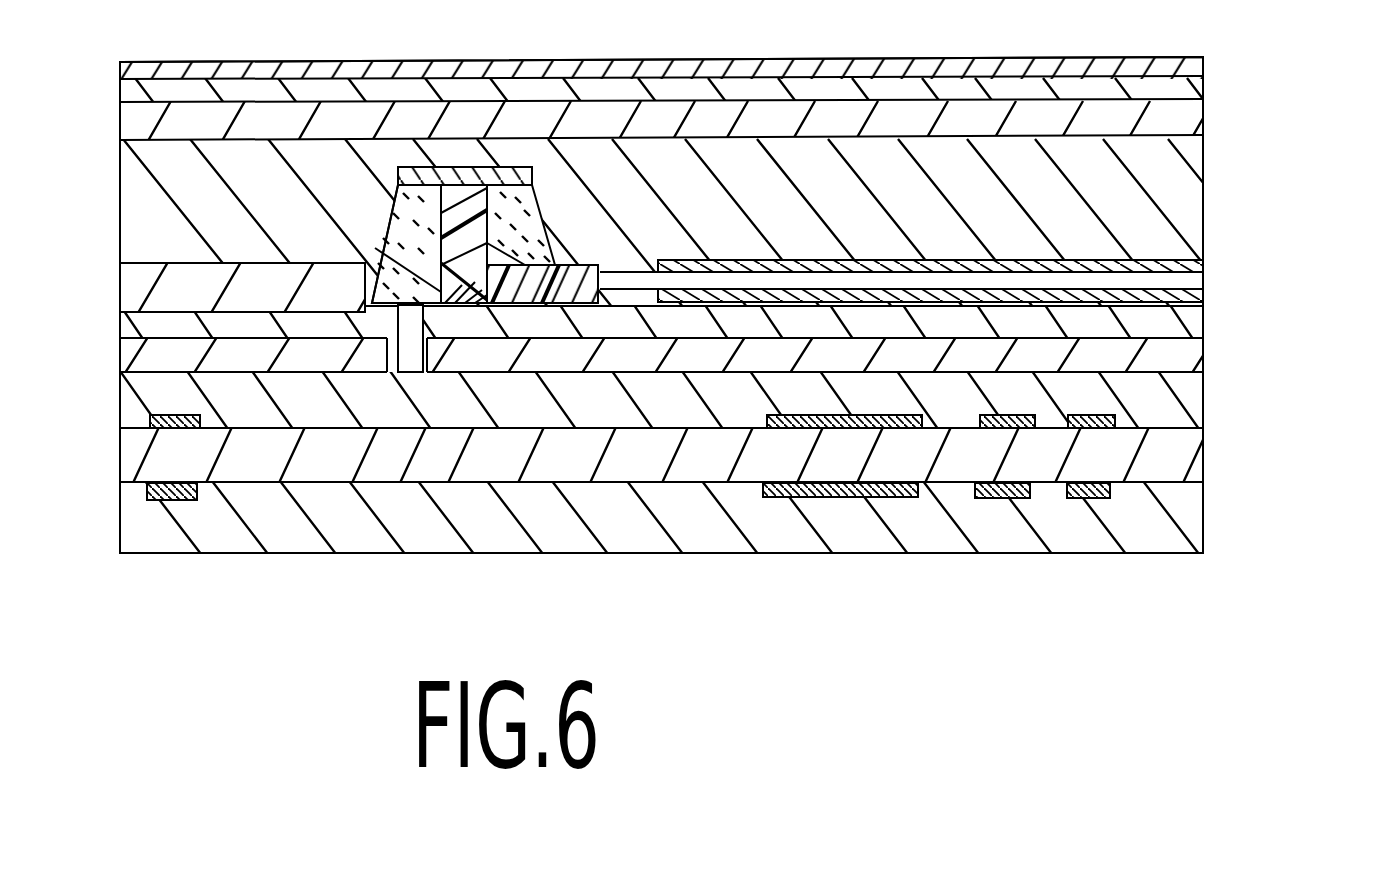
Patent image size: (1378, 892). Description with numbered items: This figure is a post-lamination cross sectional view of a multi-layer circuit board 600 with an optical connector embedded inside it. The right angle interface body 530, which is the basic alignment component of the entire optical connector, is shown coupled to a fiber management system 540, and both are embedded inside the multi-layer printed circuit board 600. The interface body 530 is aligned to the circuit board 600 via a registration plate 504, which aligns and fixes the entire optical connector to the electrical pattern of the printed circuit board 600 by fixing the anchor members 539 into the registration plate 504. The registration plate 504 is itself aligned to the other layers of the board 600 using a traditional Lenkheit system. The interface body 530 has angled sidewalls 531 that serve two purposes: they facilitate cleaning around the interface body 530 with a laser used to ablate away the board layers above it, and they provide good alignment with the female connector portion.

The registration plate 504 is at (1205, 343).
The right angle interface body 530 is at (538, 201).
The angled sidewalls 531 is at (382, 219).
The anchor members 539 is at (402, 373).
The fiber management system 540 is at (1073, 262).
The multi-layer circuit board 600 is at (1082, 612).